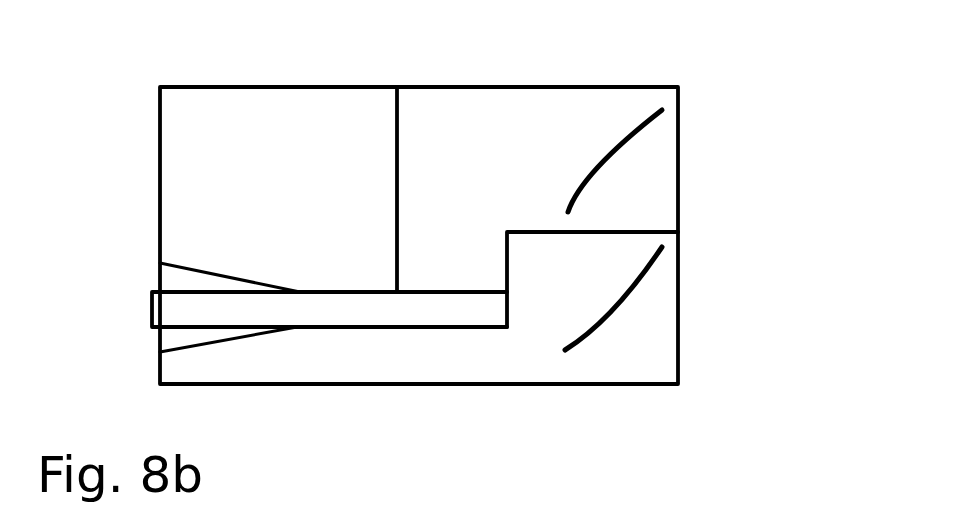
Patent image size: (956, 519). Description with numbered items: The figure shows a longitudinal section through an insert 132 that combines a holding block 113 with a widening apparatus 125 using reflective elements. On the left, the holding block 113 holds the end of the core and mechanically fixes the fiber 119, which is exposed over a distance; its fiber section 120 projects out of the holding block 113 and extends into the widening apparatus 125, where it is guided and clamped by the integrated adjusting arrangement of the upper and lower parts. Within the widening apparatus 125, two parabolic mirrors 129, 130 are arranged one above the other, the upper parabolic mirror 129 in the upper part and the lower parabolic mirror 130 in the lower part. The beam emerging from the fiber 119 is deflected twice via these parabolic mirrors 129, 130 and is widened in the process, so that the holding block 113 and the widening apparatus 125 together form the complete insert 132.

The holding block 113 is at (227, 120).
The widening apparatus 125 is at (505, 113).
The insert 132 is at (692, 75).
The parabolic mirror 129 is at (613, 147).
The parabolic mirror 130 is at (618, 307).
The fiber 119 is at (348, 307).
The fiber section 120 is at (447, 308).